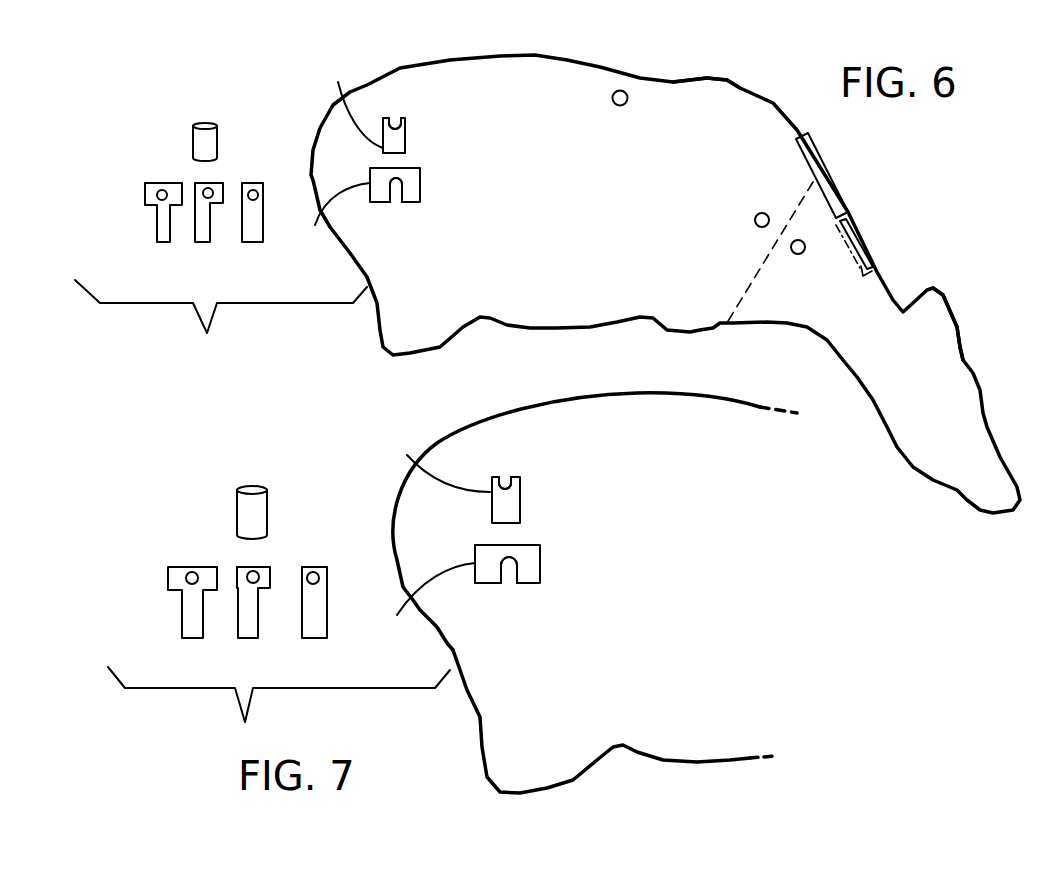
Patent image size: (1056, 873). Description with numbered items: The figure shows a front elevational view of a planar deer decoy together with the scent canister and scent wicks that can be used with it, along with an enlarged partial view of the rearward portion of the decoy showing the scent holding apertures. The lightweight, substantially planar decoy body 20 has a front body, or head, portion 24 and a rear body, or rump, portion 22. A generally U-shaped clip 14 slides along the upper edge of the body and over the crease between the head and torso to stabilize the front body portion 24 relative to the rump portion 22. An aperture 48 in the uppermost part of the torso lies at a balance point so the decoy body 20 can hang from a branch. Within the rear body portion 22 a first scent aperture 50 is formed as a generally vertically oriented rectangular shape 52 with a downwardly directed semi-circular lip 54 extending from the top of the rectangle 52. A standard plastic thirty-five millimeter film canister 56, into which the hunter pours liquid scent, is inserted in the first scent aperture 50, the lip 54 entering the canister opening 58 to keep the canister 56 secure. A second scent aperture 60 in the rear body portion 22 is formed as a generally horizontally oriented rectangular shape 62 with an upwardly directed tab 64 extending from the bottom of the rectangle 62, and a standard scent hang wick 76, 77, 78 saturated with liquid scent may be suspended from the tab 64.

In FIG. 6, the U-shaped clip 14 is at (833, 193).
In FIG. 6, the planar decoy body 20 is at (672, 122).
In FIG. 6, the rear body portion 22 is at (452, 83).
In FIG. 7, the rear body portion 22 is at (610, 443).
In FIG. 6, the front body portion 24 is at (942, 355).
In FIG. 6, the aperture 48 is at (627, 91).
In FIG. 6, the first scent aperture 50 is at (353, 102).
In FIG. 7, the first scent aperture 50 is at (443, 460).
In FIG. 6, the rectangular shape 52 is at (405, 148).
In FIG. 7, the rectangular shape 52 is at (520, 507).
In FIG. 6, the downwardly directed lip 54 is at (397, 120).
In FIG. 7, the downwardly directed lip 54 is at (505, 482).
In FIG. 6, the film canister 56 is at (218, 142).
In FIG. 7, the film canister 56 is at (270, 510).
In FIG. 6, the canister opening 58 is at (207, 123).
In FIG. 7, the canister opening 58 is at (253, 486).
In FIG. 6, the second scent aperture 60 is at (330, 221).
In FIG. 7, the second scent aperture 60 is at (426, 603).
In FIG. 6, the rectangular shape 62 is at (420, 187).
In FIG. 7, the rectangular shape 62 is at (540, 563).
In FIG. 6, the upwardly directed tab 64 is at (396, 195).
In FIG. 7, the upwardly directed tab 64 is at (507, 570).
In FIG. 6, the scent hang wick 76 is at (163, 242).
In FIG. 7, the scent hang wick 76 is at (195, 638).
In FIG. 6, the scent hang wick 77 is at (203, 242).
In FIG. 7, the scent hang wick 77 is at (250, 638).
In FIG. 6, the scent hang wick 78 is at (260, 242).
In FIG. 7, the scent hang wick 78 is at (327, 638).